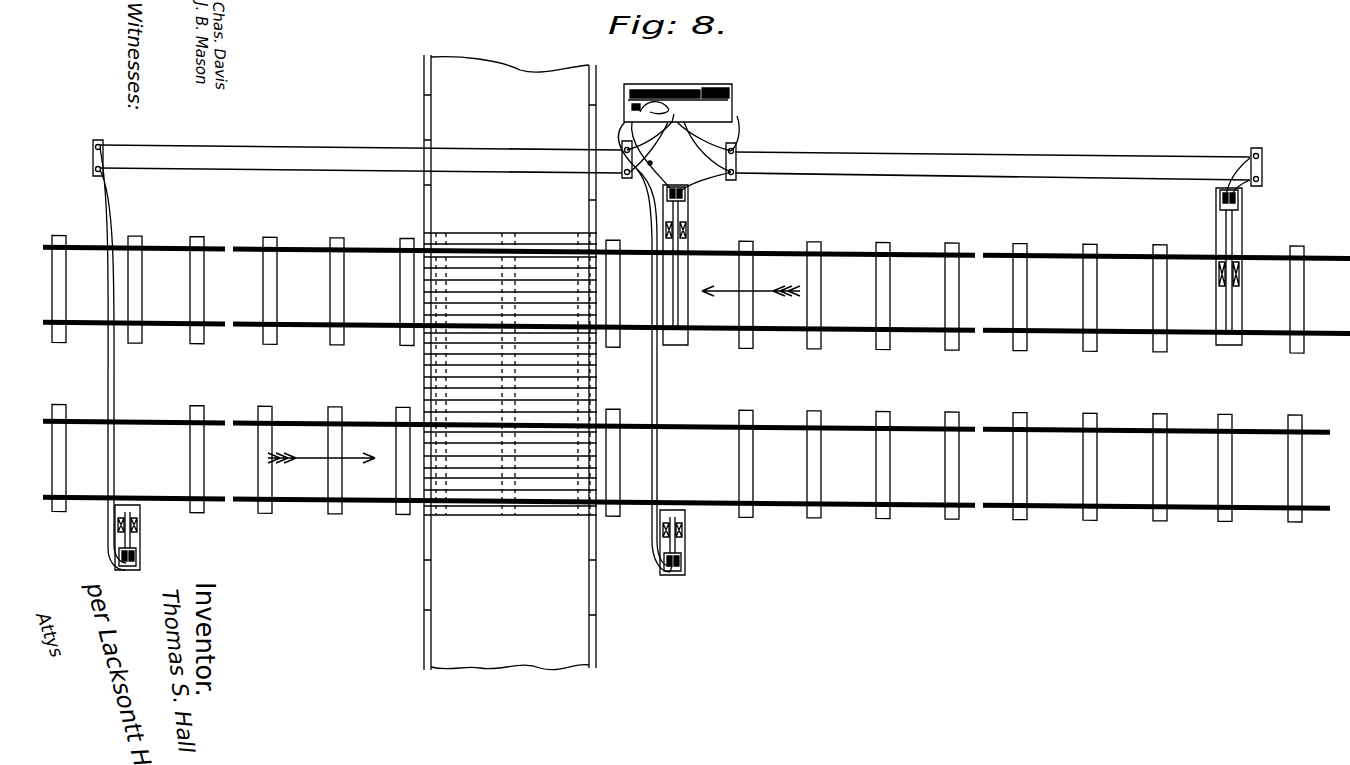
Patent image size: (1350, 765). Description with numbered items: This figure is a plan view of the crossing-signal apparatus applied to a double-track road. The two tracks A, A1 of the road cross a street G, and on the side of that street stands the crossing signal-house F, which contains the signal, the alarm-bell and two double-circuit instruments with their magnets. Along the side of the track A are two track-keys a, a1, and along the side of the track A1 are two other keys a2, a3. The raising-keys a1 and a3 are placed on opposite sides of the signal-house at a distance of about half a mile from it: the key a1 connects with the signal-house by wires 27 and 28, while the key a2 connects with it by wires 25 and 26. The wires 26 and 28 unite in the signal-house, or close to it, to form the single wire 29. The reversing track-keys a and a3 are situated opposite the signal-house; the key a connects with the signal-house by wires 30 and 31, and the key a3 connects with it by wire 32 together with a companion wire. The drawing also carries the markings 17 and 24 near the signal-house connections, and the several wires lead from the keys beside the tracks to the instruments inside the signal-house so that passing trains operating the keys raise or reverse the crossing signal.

The wire from instrument to rod 27 connector 17 is at (704, 136).
The instrument terminal 24 is at (673, 111).
The wire 25 is at (357, 153).
The wire 26 is at (384, 152).
The wire 27 is at (988, 158).
The wire 28 is at (968, 157).
The wire 29 is at (649, 135).
The wire 30 is at (651, 249).
The wire 31 is at (718, 149).
The wire 32 is at (639, 347).
The reversing track-key a is at (681, 265).
The raising-key a1 is at (1238, 251).
The raising-key a2 is at (138, 537).
The reversing track-key a3 is at (683, 542).
The track A is at (696, 294).
The track A1 is at (686, 463).
The street G is at (510, 362).
The crossing signal-house F is at (690, 84).